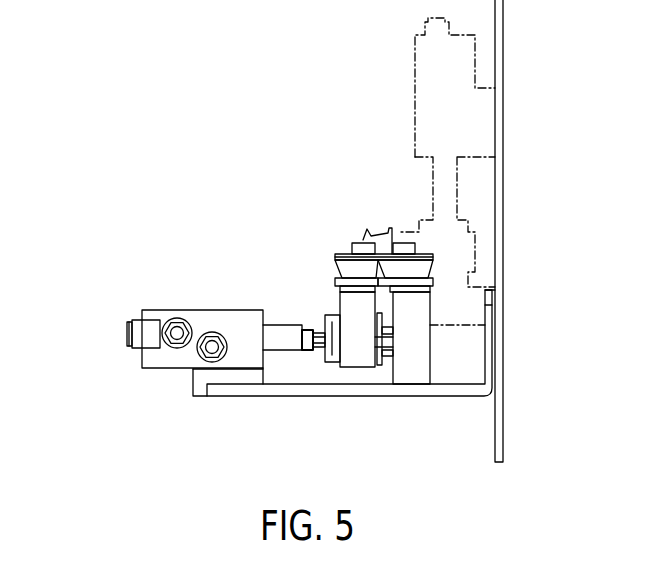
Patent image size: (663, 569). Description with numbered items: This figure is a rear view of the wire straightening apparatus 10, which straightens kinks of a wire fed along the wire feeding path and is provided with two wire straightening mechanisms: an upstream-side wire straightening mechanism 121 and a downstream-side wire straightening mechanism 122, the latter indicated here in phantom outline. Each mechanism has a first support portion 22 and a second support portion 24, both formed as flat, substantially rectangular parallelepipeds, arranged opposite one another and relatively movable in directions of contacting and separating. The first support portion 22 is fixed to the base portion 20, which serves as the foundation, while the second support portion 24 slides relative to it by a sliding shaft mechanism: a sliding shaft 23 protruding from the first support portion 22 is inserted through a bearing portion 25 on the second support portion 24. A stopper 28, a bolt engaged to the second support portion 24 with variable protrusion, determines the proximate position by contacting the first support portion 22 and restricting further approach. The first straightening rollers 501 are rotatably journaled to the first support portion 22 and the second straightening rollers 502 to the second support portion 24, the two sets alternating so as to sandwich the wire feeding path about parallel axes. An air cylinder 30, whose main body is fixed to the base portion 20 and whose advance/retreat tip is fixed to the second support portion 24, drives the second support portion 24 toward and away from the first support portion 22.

The wire straightening apparatus 10 is at (93, 127).
The base portion 20 is at (503, 358).
The first support portion 22 is at (423, 380).
The sliding shaft 23 is at (288, 345).
The second support portion 24 is at (347, 360).
The bearing portion 25 is at (323, 360).
The stopper 28 is at (383, 360).
The air cylinder 30 is at (156, 362).
The upstream-side wire straightening mechanism 121 is at (137, 285).
The downstream-side wire straightening mechanism 122 is at (413, 66).
The first straightening roller 501 is at (383, 258).
The second straightening roller 502 is at (347, 273).